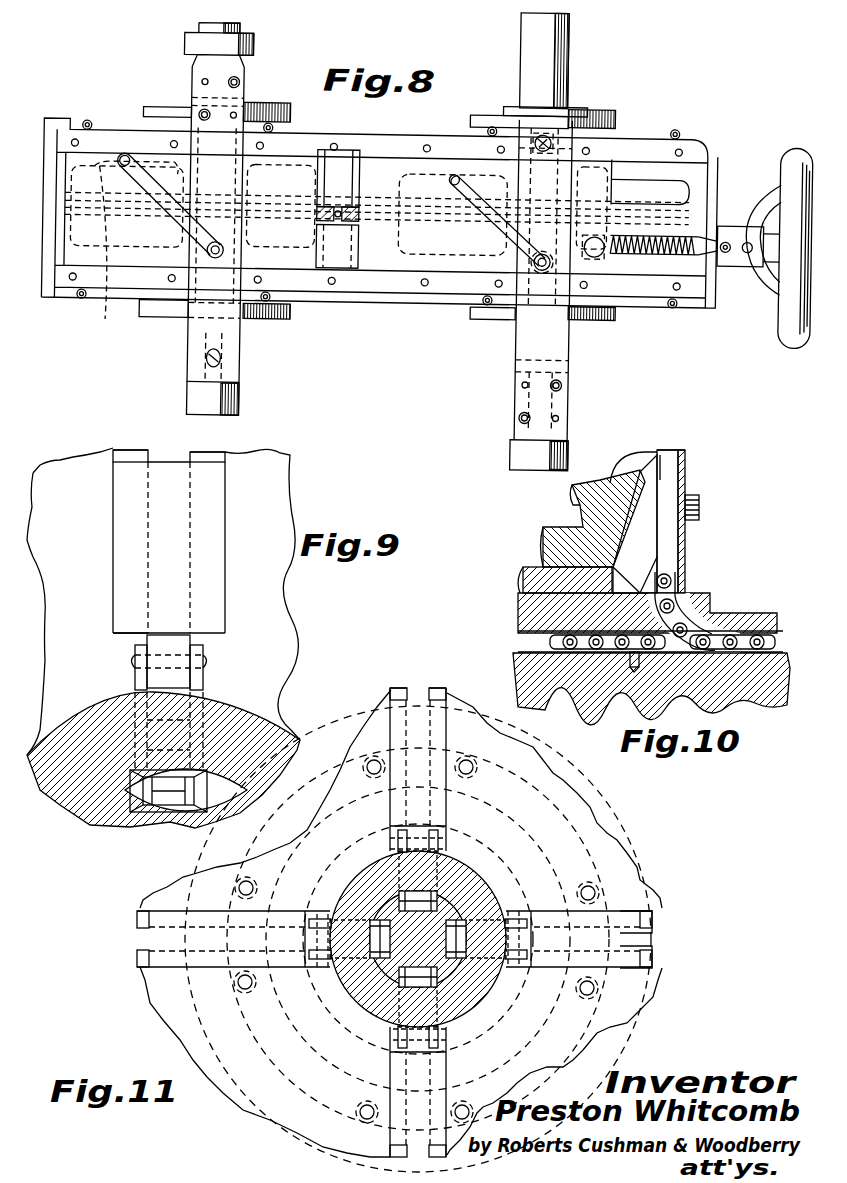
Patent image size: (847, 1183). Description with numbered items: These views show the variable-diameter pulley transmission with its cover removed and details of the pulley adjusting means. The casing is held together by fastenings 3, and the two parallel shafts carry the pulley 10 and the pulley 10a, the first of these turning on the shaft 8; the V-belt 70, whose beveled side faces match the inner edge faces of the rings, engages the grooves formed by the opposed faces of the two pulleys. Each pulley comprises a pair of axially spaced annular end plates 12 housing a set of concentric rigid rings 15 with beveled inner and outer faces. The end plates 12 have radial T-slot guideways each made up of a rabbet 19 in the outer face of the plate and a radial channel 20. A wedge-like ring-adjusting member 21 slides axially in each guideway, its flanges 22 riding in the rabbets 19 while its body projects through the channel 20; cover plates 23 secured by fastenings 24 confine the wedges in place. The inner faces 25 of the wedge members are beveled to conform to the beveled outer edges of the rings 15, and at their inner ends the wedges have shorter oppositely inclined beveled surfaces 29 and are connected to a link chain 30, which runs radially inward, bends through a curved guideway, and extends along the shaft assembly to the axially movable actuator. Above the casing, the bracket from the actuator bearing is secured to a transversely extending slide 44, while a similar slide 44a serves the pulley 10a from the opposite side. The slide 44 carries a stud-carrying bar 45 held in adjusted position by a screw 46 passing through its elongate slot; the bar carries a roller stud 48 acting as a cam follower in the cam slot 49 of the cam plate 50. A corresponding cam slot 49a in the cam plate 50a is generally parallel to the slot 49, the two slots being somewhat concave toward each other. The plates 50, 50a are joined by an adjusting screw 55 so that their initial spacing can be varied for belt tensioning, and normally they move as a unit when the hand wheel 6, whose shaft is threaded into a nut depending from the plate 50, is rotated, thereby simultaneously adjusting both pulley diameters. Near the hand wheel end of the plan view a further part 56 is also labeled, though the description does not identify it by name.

In FIG. 8, the fastenings 3 is at (692, 117).
In FIG. 8, the hand wheel 6 is at (790, 330).
In FIG. 8, the shaft 8 is at (563, 38).
In FIG. 8, the pulley 10 is at (672, 176).
In FIG. 8, the pulley 10a is at (98, 160).
In FIG. 9, the annular end plates 12 is at (56, 466).
In FIG. 10, the concentric rigid rings 15 is at (568, 533).
In FIG. 9, the rabbet 19 is at (215, 455).
In FIG. 10, the rabbet 19 is at (668, 458).
In FIG. 11, the rabbet 19 is at (398, 690).
In FIG. 9, the radial channel 20 is at (158, 462).
In FIG. 11, the radial channel 20 is at (424, 702).
In FIG. 9, the wedge-like ring-adjusting member 21 is at (222, 600).
In FIG. 10, the wedge-like ring-adjusting member 21 is at (652, 497).
In FIG. 11, the wedge-like ring-adjusting member 21 is at (470, 786).
In FIG. 9, the flanges 22 is at (120, 577).
In FIG. 10, the flanges 22 is at (672, 532).
In FIG. 11, the flanges 22 is at (392, 730).
In FIG. 10, the cover plates 23 is at (683, 546).
In FIG. 10, the fastenings 24 is at (700, 506).
In FIG. 10, the inner faces 25 is at (618, 480).
In FIG. 10, the beveled surfaces 29 is at (676, 556).
In FIG. 10, the link chain 30 is at (745, 636).
In FIG. 8, the slide 44 is at (573, 348).
In FIG. 8, the slide 44a is at (243, 104).
In FIG. 8, the stud-carrying bar 45 is at (533, 138).
In FIG. 8, the screw 46 is at (548, 135).
In FIG. 8, the roller stud 48 is at (535, 260).
In FIG. 8, the cam slot 49 is at (492, 213).
In FIG. 8, the cam slot 49a is at (128, 155).
In FIG. 8, the cam plate 50 is at (597, 160).
In FIG. 8, the cam plate 50a is at (293, 160).
In FIG. 8, the adjusting screw 55 is at (348, 200).
In FIG. 8, the spring 56 is at (688, 210).
In FIG. 8, the V-belt 70 is at (372, 228).